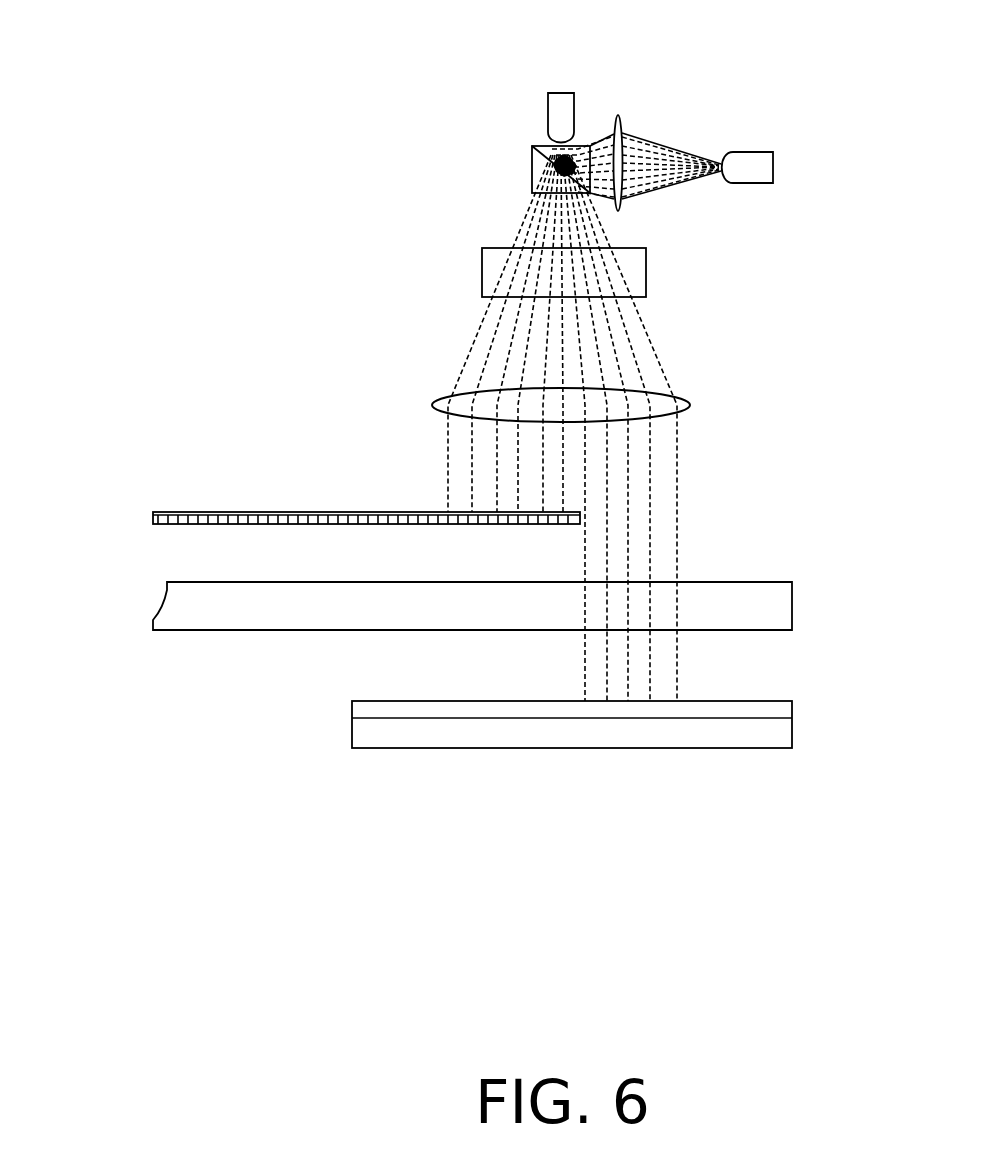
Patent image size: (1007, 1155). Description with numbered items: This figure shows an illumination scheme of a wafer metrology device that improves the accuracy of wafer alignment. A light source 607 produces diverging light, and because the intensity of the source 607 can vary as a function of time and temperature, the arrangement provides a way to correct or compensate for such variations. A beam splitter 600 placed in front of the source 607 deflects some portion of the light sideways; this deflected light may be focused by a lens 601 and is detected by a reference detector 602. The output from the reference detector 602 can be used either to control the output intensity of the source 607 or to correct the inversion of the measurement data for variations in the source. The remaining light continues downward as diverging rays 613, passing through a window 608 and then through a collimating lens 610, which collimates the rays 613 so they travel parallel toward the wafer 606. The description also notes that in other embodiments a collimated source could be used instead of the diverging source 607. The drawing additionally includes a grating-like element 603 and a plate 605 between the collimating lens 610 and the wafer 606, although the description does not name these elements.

The beam splitter 600 is at (532, 165).
The lens 601 is at (619, 116).
The reference detector 602 is at (758, 152).
The grating 603 is at (153, 522).
The plate 605 is at (197, 617).
The wafer 606 is at (352, 720).
The light source 607 is at (547, 92).
The window 608 is at (482, 270).
The collimating lens 610 is at (430, 405).
The rays 613 is at (663, 373).